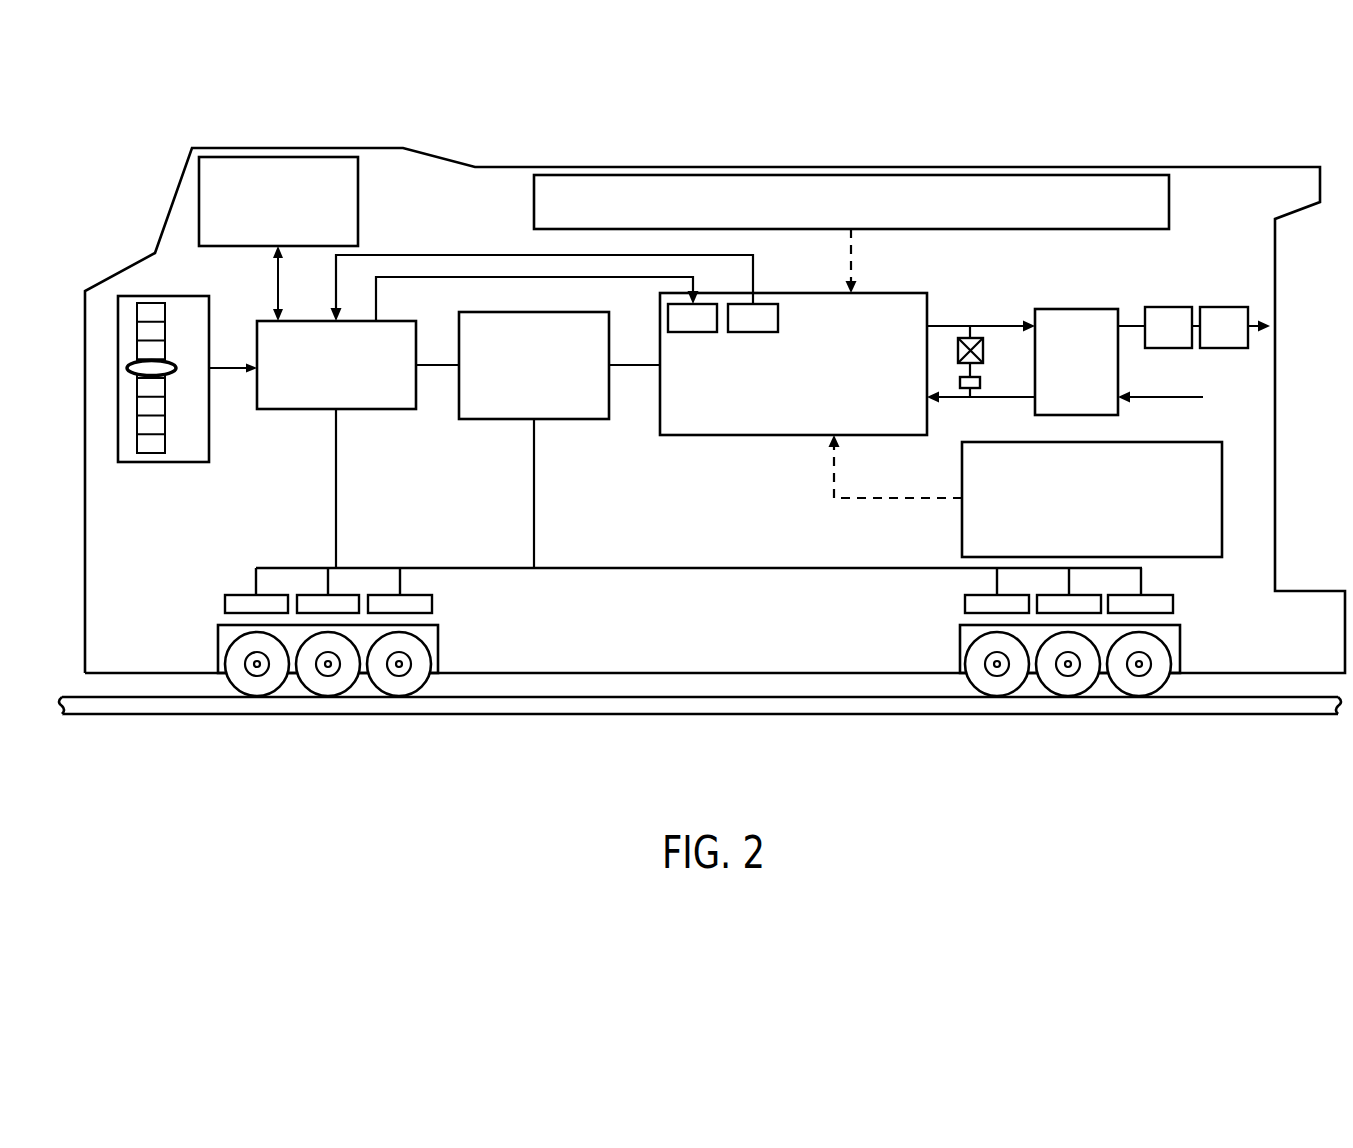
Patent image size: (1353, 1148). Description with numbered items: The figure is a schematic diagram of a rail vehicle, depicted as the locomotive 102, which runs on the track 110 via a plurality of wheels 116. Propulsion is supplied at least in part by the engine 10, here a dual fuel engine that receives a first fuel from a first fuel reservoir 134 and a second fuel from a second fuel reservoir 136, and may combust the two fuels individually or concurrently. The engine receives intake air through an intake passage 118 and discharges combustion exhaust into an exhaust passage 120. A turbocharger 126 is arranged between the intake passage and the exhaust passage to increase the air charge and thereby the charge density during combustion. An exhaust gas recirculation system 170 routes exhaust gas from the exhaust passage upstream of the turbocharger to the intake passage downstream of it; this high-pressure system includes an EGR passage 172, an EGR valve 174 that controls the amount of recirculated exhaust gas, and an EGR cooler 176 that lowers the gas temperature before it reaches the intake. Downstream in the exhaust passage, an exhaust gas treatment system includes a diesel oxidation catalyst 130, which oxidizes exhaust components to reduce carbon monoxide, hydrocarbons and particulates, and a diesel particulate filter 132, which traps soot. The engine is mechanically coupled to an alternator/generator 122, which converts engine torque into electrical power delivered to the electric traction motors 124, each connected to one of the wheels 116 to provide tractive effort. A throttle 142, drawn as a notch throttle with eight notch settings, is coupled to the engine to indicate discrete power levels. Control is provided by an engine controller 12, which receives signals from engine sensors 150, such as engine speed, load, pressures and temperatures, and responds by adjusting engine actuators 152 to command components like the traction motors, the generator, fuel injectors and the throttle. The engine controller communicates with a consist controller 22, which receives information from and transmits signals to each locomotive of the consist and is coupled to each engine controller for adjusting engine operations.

The locomotive 102 is at (1000, 167).
The track 110 is at (1250, 714).
The throttle 142 is at (140, 293).
The consist controller 22 is at (290, 242).
The engine controller 12 is at (347, 404).
The alternator/generator 122 is at (548, 390).
The engine 10 is at (803, 390).
The engine actuators 152 is at (692, 318).
The engine sensors 150 is at (753, 318).
The first fuel reservoir 134 is at (902, 214).
The second fuel reservoir 136 is at (1143, 510).
The turbocharger 126 is at (1092, 386).
The exhaust gas recirculation system 170 is at (977, 317).
The EGR valve 174 is at (983, 341).
The EGR passage 172 is at (975, 369).
The EGR cooler 176 is at (972, 398).
The intake passage 118 is at (1150, 397).
The exhaust passage 120 is at (1131, 325).
The diesel oxidation catalyst 130 is at (1183, 338).
The diesel particulate filter 132 is at (1238, 338).
The electric traction motors 124 is at (1185, 590).
The wheels 116 is at (1187, 647).